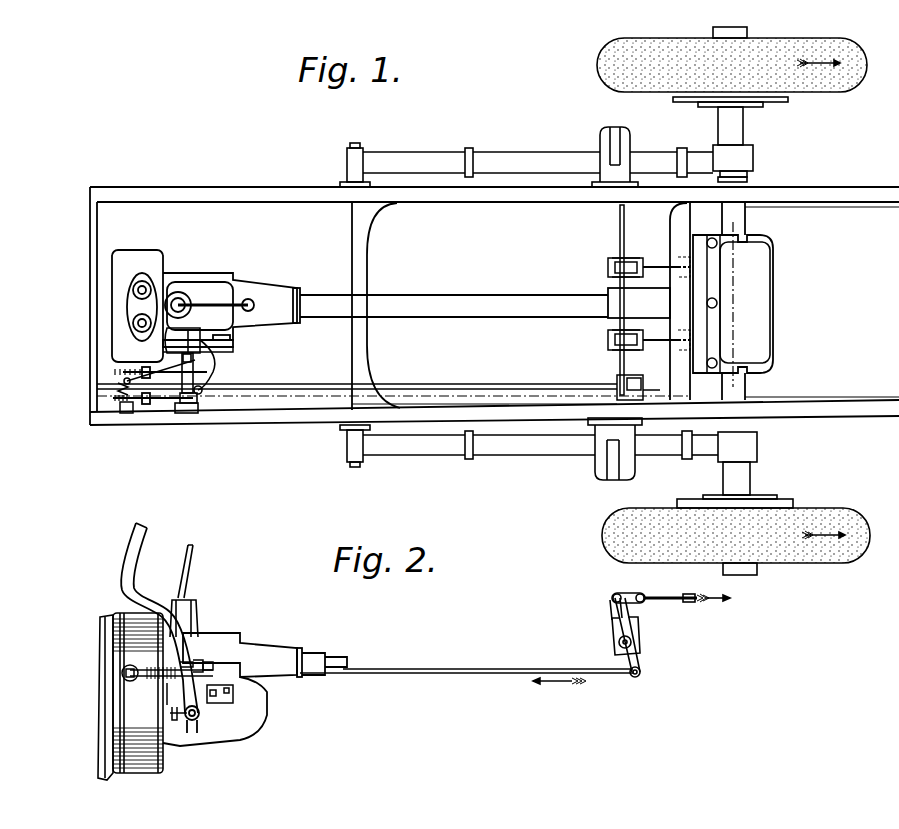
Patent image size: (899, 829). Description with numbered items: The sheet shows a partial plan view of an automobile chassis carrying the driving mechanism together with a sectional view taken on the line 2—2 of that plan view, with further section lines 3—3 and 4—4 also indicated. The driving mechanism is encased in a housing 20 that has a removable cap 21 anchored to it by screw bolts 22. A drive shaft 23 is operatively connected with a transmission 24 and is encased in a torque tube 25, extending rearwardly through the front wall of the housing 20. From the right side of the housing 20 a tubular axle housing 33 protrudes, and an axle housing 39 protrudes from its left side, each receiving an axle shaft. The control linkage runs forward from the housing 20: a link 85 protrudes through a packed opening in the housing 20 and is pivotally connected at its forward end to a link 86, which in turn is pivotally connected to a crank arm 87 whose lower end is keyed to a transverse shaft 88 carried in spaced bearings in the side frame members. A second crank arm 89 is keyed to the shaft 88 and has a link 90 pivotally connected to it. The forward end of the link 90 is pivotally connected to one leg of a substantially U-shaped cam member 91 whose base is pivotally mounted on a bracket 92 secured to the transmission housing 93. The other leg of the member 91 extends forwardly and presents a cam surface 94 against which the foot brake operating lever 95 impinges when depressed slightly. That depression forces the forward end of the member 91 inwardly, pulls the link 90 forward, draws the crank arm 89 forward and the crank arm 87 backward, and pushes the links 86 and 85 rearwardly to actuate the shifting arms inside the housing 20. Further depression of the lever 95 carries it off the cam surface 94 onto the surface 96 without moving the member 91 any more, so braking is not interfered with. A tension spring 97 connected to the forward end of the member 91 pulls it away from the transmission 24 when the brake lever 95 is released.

In FIG. 1, the section line 2— 2 is at (640, 390).
In FIG. 1, the section line 3— 3 is at (717, 226).
In FIG. 1, the section line 4— 4 is at (733, 222).
In FIG. 1, the housing 20 is at (775, 256).
In FIG. 1, the removable cap 21 is at (757, 326).
In FIG. 1, the screw bolts 22 is at (717, 303).
In FIG. 2, the drive shaft 23 is at (255, 702).
In FIG. 1, the transmission 24 is at (250, 284).
In FIG. 2, the transmission 24 is at (218, 633).
In FIG. 1, the torque tube 25 is at (458, 295).
In FIG. 1, the tubular axle housing 33 is at (760, 208).
In FIG. 1, the axle housing 39 is at (760, 393).
In FIG. 1, the link 85 is at (666, 260).
In FIG. 2, the link 85 is at (680, 602).
In FIG. 1, the link 86 is at (618, 257).
In FIG. 2, the link 86 is at (628, 594).
In FIG. 1, the crank arm 87 is at (608, 267).
In FIG. 2, the crank arm 87 is at (613, 608).
In FIG. 1, the transverse shaft 88 is at (620, 232).
In FIG. 2, the transverse shaft 88 is at (633, 641).
In FIG. 1, the crank arm 89 is at (630, 378).
In FIG. 2, the crank arm 89 is at (637, 660).
In FIG. 1, the link 90 is at (588, 386).
In FIG. 2, the link 90 is at (477, 668).
In FIG. 1, the U-shaped cam member 91 is at (212, 374).
In FIG. 2, the U-shaped cam member 91 is at (222, 660).
In FIG. 1, the bracket 92 is at (202, 344).
In FIG. 2, the bracket 92 is at (190, 690).
In FIG. 1, the transmission housing 93 is at (248, 327).
In FIG. 1, the cam surface 94 is at (165, 378).
In FIG. 2, the cam surface 94 is at (167, 683).
In FIG. 1, the foot brake operating lever 95 is at (130, 372).
In FIG. 2, the foot brake operating lever 95 is at (125, 583).
In FIG. 1, the surface 96 is at (147, 404).
In FIG. 2, the surface 96 is at (148, 678).
In FIG. 1, the tension spring 97 is at (122, 408).
In FIG. 2, the tension spring 97 is at (126, 680).